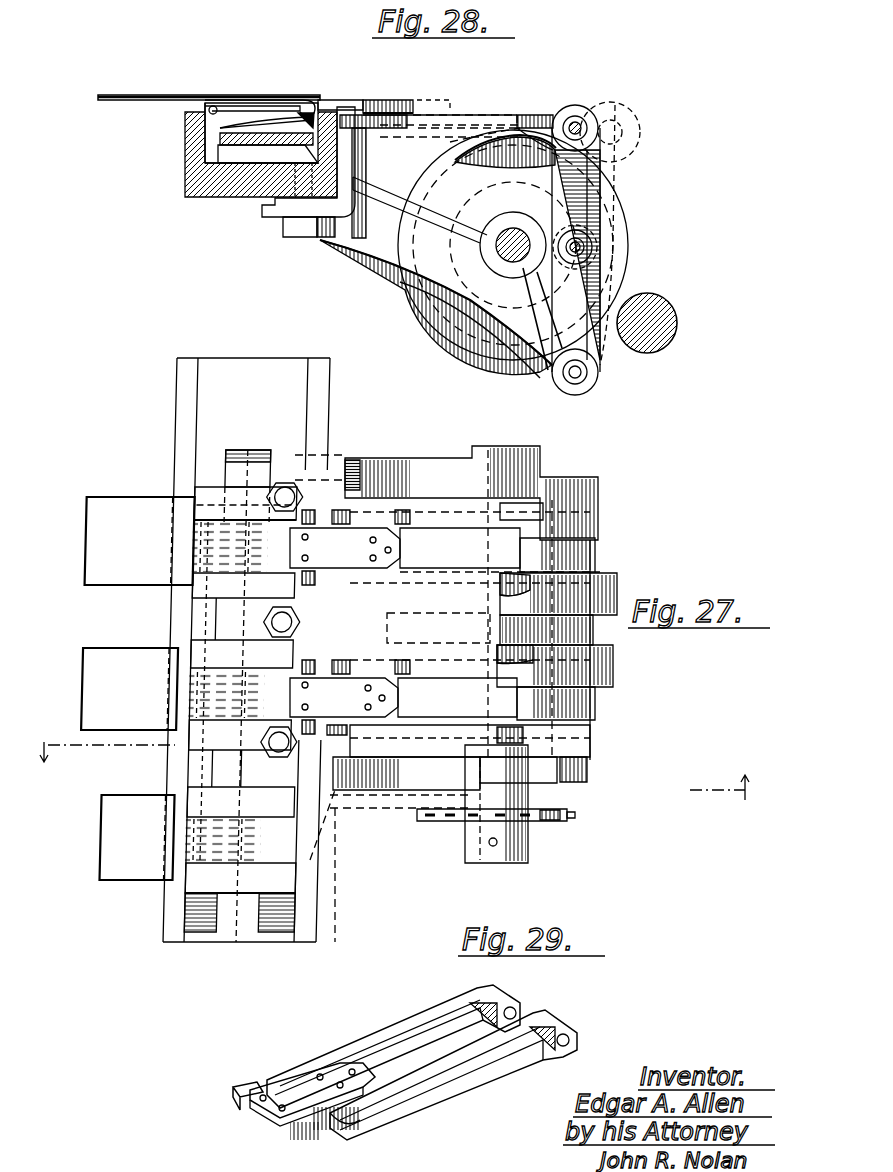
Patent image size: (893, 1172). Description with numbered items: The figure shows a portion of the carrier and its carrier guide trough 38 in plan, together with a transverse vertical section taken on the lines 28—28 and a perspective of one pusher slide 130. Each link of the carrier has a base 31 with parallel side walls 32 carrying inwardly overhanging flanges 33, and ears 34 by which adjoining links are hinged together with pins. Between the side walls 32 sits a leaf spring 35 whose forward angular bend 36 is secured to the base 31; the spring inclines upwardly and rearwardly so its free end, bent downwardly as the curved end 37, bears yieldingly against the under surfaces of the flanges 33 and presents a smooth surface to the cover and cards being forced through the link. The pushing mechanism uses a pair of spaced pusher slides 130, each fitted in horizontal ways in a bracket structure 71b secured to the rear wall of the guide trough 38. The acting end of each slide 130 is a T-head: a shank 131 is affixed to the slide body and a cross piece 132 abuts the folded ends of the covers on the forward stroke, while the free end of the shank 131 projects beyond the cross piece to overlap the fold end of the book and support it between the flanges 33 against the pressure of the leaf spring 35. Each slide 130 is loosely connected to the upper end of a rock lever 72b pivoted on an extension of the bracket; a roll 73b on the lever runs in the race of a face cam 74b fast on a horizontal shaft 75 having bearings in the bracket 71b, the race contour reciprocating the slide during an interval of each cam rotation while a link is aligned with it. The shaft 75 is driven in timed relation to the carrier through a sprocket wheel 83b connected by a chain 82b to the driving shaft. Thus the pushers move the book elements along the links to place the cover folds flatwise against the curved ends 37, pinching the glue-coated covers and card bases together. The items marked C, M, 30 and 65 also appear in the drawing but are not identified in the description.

In FIG. 27, the section line 28 is at (390, 761).
In FIG. 27, the core 30 is at (310, 900).
In FIG. 28, the base 31 is at (262, 132).
In FIG. 28, the side walls 32 is at (210, 125).
In FIG. 28, the inwardly overhanging flanges 33 is at (215, 98).
In FIG. 27, the inwardly overhanging flanges 33 is at (210, 494).
In FIG. 27, the ears 34 is at (262, 448).
In FIG. 28, the leaf spring 35 is at (240, 130).
In FIG. 28, the angular bend 36 is at (215, 152).
In FIG. 28, the curved end 37 is at (318, 104).
In FIG. 27, the curved end 37 is at (200, 878).
In FIG. 28, the carrier guide trough 38 is at (184, 194).
In FIG. 27, the carrier guide trough 38 is at (178, 358).
In FIG. 28, the shaft 65 is at (677, 330).
In FIG. 28, the bracket structure 71b is at (423, 162).
In FIG. 27, the bracket structure 71b is at (412, 492).
In FIG. 28, the rock lever 72b is at (608, 100).
In FIG. 27, the rock lever 72b is at (597, 553).
In FIG. 28, the roll 73b is at (620, 232).
In FIG. 28, the face cam 74b is at (630, 243).
In FIG. 27, the face cam 74b is at (615, 672).
In FIG. 28, the horizontal shaft 75 is at (505, 252).
In FIG. 27, the horizontal shaft 75 is at (497, 863).
In FIG. 27, the chain 82b is at (345, 815).
In FIG. 27, the sprocket wheel 83b is at (576, 820).
In FIG. 28, the slide 130 is at (520, 110).
In FIG. 27, the slide 130 is at (437, 610).
In FIG. 29, the slide 130 is at (352, 1125).
In FIG. 28, the shank 131 is at (400, 98).
In FIG. 27, the shank 131 is at (345, 622).
In FIG. 29, the shank 131 is at (262, 1110).
In FIG. 27, the cross piece 132 is at (312, 518).
In FIG. 29, the cross piece 132 is at (233, 1092).
In FIG. 27, the coil C is at (378, 885).
In FIG. 27, the magnet M is at (185, 592).